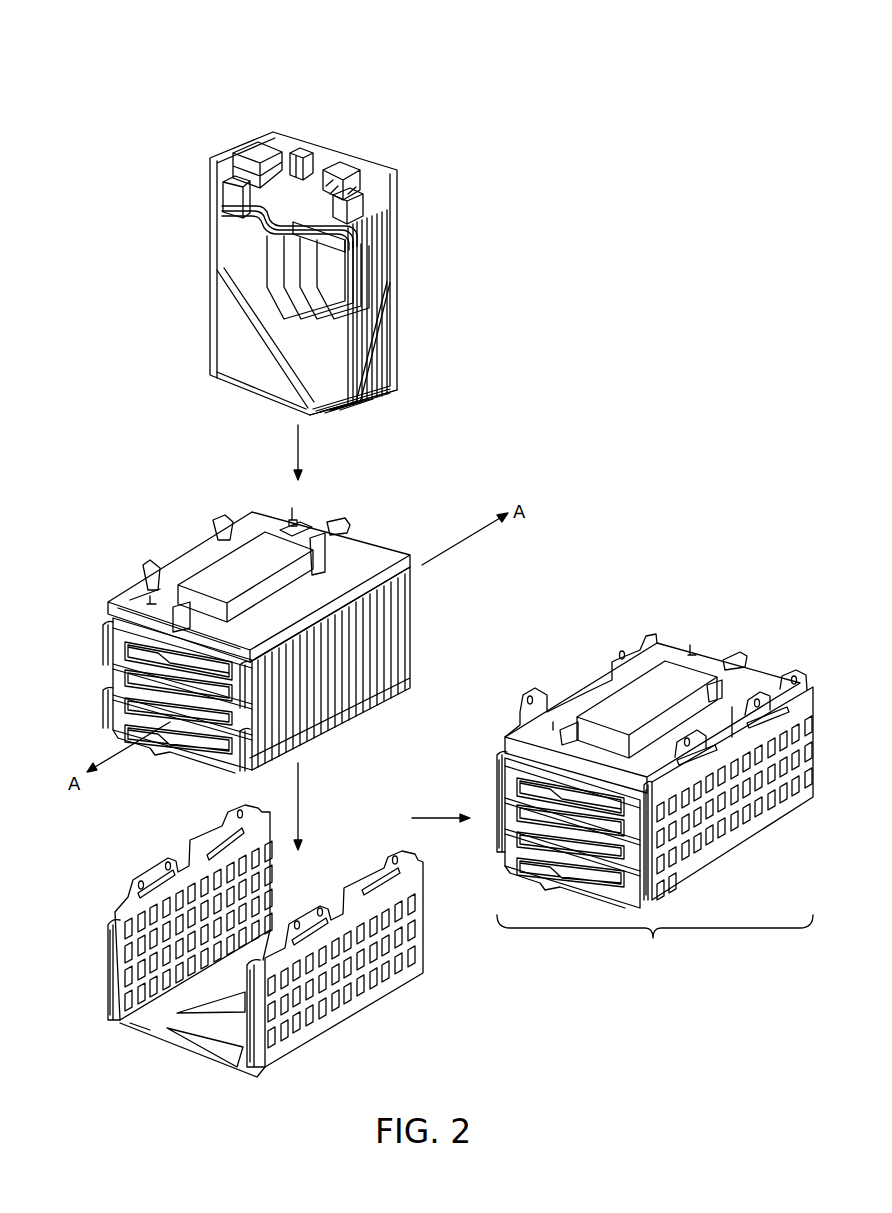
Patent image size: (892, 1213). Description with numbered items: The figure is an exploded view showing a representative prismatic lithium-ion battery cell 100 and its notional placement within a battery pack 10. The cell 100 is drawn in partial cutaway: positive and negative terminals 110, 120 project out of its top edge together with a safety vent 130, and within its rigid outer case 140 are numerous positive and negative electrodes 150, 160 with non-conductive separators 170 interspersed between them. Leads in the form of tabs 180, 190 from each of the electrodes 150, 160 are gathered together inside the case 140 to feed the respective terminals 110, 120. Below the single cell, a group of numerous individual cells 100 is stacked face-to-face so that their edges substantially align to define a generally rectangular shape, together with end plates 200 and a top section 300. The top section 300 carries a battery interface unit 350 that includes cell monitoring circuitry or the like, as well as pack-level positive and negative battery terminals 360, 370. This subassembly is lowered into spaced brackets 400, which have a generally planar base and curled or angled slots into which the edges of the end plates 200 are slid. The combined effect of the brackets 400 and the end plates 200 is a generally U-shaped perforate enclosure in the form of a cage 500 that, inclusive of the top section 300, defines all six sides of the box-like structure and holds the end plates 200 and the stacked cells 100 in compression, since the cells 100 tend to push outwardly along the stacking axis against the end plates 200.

The battery pack 10 is at (763, 652).
The prismatic lithium-ion battery cell 100 is at (197, 152).
The positive terminal 110 is at (343, 170).
The negative terminal 120 is at (258, 150).
The safety vent 130 is at (313, 153).
The rigid outer case 140 is at (245, 333).
The positive electrode 150 is at (345, 240).
The negative electrode 160 is at (242, 248).
The separator 170 is at (322, 385).
The tab 180 is at (343, 217).
The tab 190 is at (230, 198).
The end plate 200 is at (97, 643).
The top section 300 is at (378, 550).
The battery interface unit 350 is at (257, 540).
The pack-level positive battery terminal 360 is at (147, 587).
The pack-level negative battery terminal 370 is at (293, 512).
The bracket 400 is at (118, 918).
The cage 500 is at (655, 941).